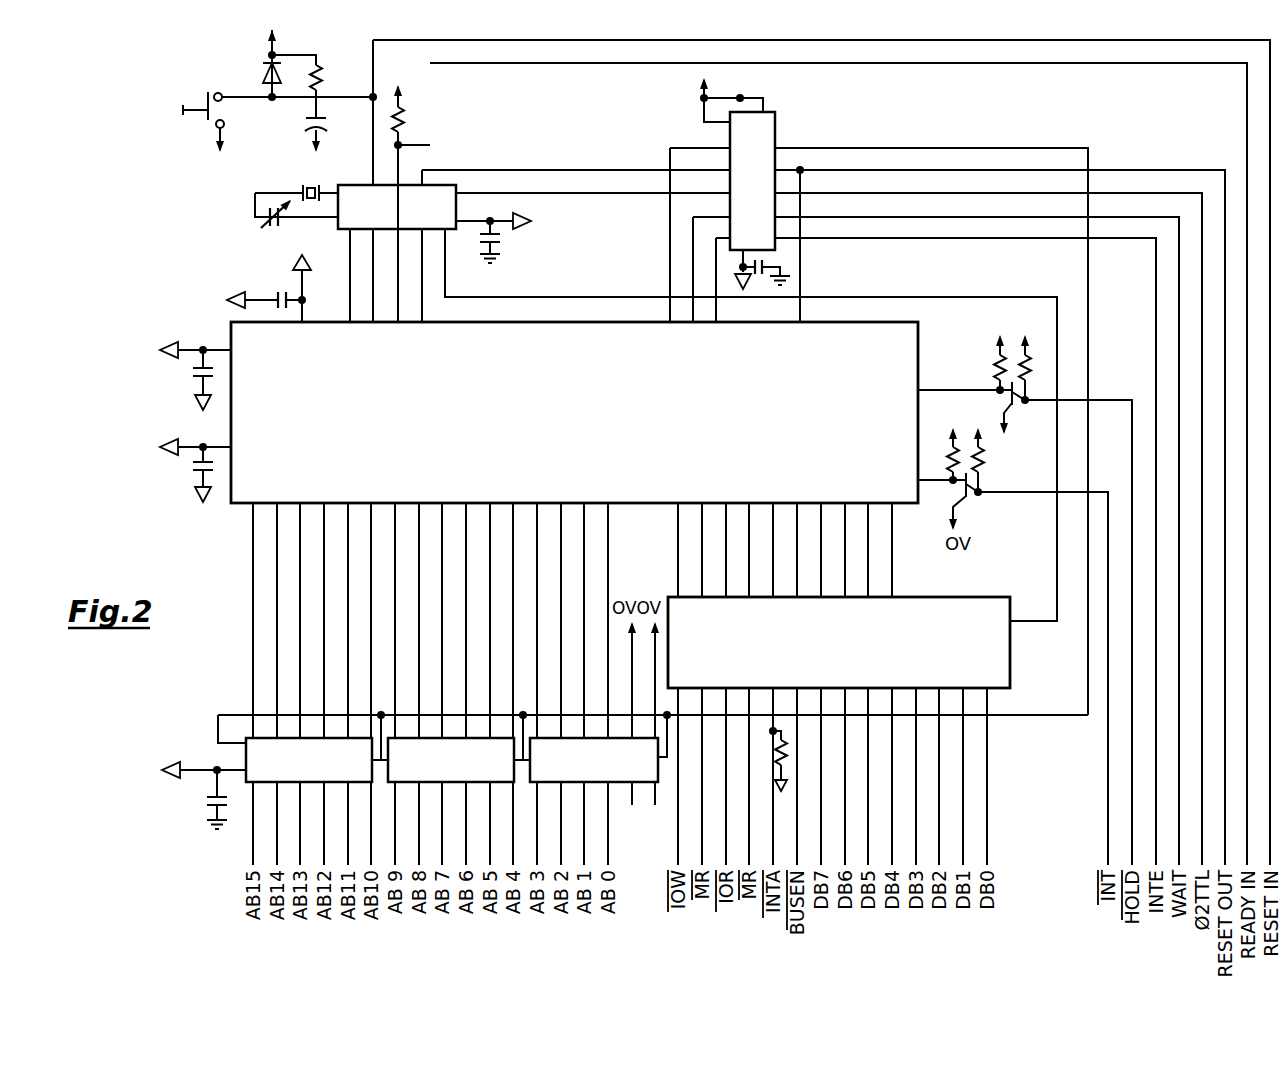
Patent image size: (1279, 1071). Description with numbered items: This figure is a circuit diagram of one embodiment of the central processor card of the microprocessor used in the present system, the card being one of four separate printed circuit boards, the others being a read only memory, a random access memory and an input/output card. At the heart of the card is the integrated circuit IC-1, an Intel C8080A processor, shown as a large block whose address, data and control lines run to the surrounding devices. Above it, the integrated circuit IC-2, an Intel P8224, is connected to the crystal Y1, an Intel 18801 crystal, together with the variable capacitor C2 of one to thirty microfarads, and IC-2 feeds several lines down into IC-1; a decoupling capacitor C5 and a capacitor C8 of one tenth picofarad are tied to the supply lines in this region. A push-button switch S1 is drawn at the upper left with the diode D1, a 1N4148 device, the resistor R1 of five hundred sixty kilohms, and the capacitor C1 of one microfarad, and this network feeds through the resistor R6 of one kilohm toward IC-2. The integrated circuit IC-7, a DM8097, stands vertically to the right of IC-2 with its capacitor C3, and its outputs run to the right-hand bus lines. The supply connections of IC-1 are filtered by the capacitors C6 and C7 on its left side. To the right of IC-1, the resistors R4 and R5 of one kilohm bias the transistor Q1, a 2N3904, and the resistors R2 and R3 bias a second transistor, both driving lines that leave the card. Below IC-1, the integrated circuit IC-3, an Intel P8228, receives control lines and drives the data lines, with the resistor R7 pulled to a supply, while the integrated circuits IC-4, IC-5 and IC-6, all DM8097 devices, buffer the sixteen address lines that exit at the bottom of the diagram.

The reset push-button switch S1 is at (266, 131).
The diode D1 is at (254, 65).
The resistor R1 is at (310, 76).
The capacitor C1 is at (329, 134).
The resistor R6 is at (406, 145).
The crystal Y1 is at (296, 190).
The capacitor C2 is at (261, 223).
The capacitor C8 is at (273, 270).
The integrated circuit IC-2 is at (397, 207).
The capacitor C5 is at (515, 237).
The integrated circuit IC-7 is at (737, 159).
The capacitor C3 is at (762, 286).
The integrated circuit IC-1 is at (574, 412).
The capacitor C6 is at (169, 389).
The capacitor C7 is at (178, 470).
The resistor R4 is at (988, 351).
The resistor R5 is at (1034, 356).
The transistor Q1 is at (979, 414).
The resistor R2 is at (942, 443).
The resistor R3 is at (987, 449).
The integrated circuit IC-3 is at (839, 642).
The resistor R7 is at (791, 780).
The integrated circuit IC-4 is at (267, 783).
The integrated circuit IC-5 is at (451, 760).
The integrated circuit IC-6 is at (594, 760).